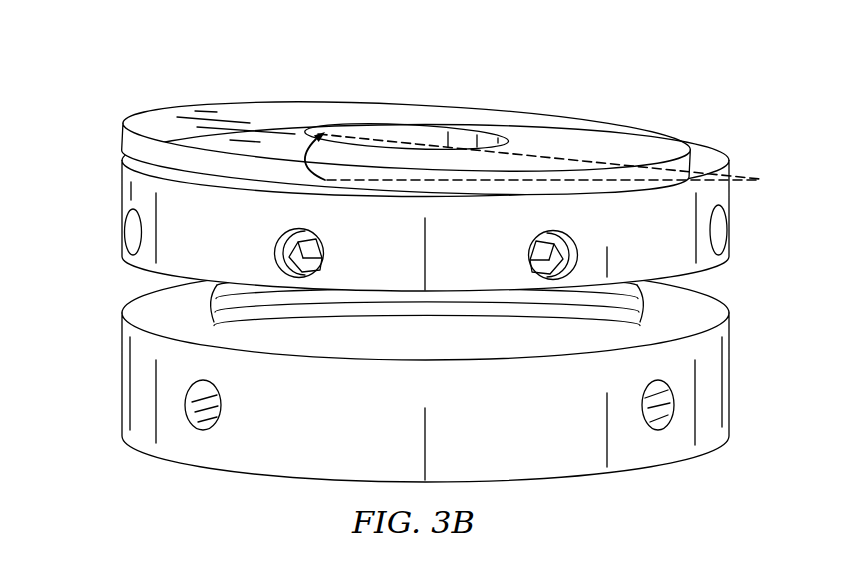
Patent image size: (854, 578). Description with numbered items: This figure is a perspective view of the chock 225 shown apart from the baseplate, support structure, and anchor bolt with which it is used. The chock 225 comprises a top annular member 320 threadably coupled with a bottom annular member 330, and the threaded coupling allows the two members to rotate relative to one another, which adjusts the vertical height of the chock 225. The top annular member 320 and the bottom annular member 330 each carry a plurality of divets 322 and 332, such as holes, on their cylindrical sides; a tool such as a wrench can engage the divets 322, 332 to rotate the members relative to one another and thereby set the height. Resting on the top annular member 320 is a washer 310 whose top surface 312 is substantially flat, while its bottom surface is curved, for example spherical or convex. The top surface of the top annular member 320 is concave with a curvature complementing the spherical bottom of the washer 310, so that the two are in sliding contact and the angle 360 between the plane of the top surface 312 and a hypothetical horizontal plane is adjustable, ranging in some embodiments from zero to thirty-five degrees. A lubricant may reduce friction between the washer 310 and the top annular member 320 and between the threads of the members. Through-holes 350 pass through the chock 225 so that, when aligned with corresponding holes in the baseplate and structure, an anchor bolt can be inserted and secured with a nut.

The chock 225 is at (281, 41).
The washer 310 is at (122, 143).
The top surface 312 is at (242, 113).
The top annular member 320 is at (145, 197).
The divets 322 is at (577, 246).
The bottom annular member 330 is at (135, 377).
The divets 332 is at (677, 400).
The through-holes 350 is at (428, 138).
The angle 360 is at (320, 157).